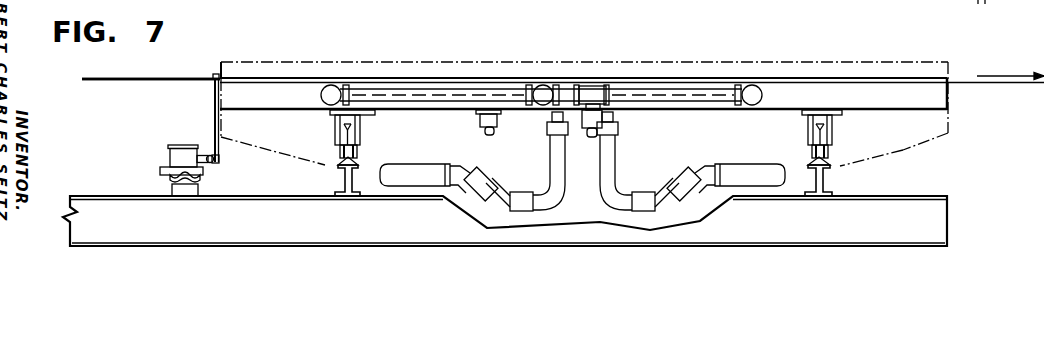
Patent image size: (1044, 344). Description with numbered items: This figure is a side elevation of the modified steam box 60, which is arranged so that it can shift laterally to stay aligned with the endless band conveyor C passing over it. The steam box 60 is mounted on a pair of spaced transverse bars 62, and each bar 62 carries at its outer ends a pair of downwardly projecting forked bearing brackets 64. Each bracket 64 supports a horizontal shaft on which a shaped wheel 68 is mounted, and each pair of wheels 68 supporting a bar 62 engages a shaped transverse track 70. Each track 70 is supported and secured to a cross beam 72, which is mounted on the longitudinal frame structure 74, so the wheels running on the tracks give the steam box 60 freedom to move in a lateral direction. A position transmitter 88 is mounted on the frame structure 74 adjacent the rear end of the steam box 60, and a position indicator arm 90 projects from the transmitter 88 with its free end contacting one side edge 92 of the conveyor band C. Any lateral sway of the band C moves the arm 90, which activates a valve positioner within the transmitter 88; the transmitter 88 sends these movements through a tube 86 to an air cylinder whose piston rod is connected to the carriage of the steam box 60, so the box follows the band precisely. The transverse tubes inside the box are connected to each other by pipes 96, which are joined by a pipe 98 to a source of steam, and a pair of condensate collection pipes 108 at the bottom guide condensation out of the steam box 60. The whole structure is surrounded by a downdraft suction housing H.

The modified steam box 60 is at (960, 103).
The transverse bar 62 is at (331, 112).
The forked bearing bracket 64 is at (358, 116).
The shaped wheel 68 is at (358, 153).
The shaped transverse track 70 is at (338, 162).
The cross beam 72 is at (357, 180).
The frame structure 74 is at (127, 203).
The tube 86 is at (204, 186).
The position transmitter 88 is at (173, 158).
The position indicator arm 90 is at (214, 100).
The side edge 92 is at (130, 82).
The pipe 96 is at (427, 89).
The pipe 98 is at (477, 122).
The condensate collection pipe 108 is at (550, 155).
The endless band conveyor C is at (172, 78).
The downdraft suction housing H is at (903, 150).